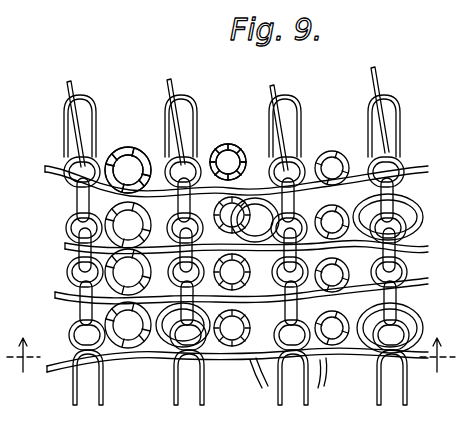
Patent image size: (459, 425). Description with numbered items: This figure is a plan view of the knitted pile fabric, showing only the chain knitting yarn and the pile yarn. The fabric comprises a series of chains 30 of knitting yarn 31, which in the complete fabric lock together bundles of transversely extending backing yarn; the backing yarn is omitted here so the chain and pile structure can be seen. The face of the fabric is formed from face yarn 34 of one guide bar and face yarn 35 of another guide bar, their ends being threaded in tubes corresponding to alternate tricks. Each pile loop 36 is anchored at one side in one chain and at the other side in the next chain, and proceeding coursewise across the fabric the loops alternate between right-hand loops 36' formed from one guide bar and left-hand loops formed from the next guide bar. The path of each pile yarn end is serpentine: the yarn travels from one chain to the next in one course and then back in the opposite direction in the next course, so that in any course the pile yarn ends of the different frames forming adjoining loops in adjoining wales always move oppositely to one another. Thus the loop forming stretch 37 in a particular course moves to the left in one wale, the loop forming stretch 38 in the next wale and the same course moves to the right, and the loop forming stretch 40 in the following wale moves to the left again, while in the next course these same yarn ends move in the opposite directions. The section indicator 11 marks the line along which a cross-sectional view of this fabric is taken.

The chain 30 is at (68, 83).
The knitting yarn 31 is at (169, 82).
The face yarn 34 is at (47, 164).
The face yarn 35 is at (201, 145).
The pile loop 36 is at (128, 224).
The right-hand loop 36' is at (129, 129).
The loop forming stretch 37 is at (100, 198).
The loop forming stretch 38 is at (232, 168).
The loop forming stretch 40 is at (307, 178).
The section line 11 is at (233, 346).